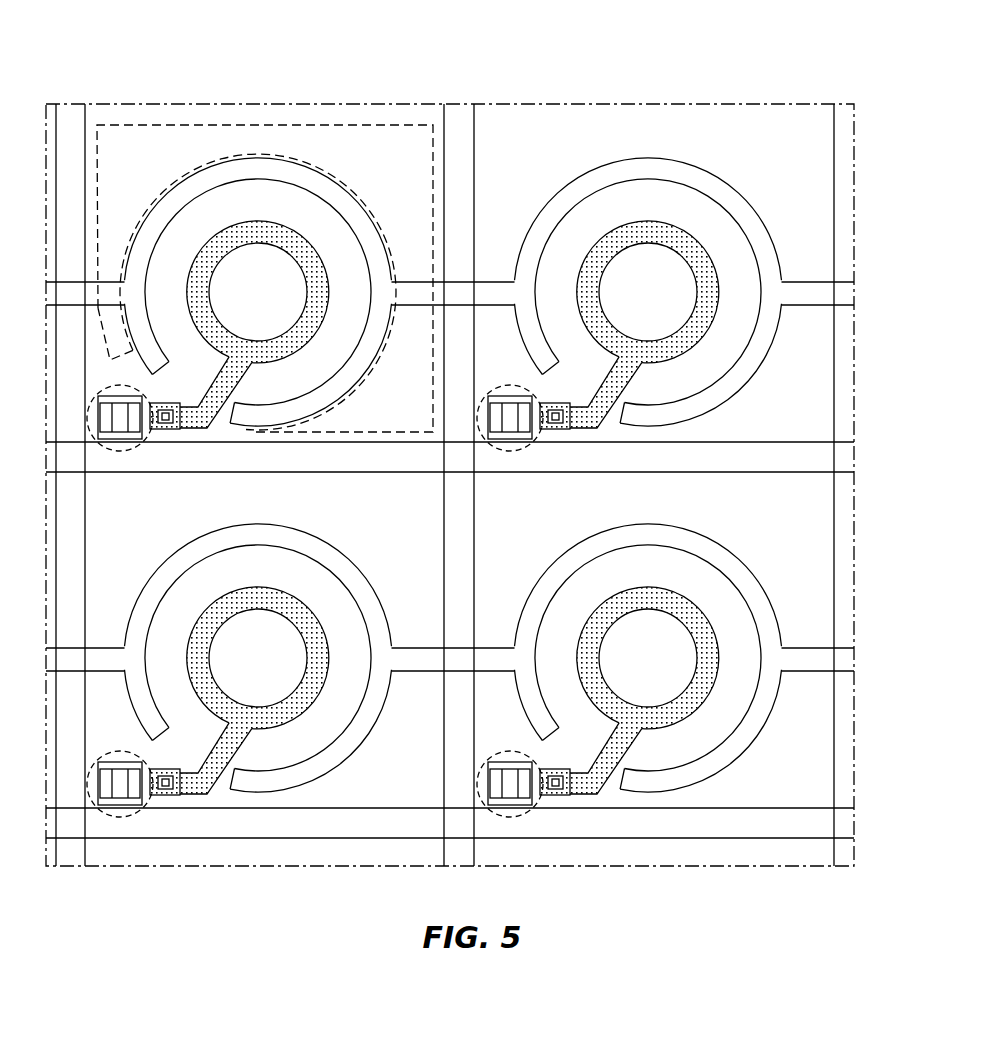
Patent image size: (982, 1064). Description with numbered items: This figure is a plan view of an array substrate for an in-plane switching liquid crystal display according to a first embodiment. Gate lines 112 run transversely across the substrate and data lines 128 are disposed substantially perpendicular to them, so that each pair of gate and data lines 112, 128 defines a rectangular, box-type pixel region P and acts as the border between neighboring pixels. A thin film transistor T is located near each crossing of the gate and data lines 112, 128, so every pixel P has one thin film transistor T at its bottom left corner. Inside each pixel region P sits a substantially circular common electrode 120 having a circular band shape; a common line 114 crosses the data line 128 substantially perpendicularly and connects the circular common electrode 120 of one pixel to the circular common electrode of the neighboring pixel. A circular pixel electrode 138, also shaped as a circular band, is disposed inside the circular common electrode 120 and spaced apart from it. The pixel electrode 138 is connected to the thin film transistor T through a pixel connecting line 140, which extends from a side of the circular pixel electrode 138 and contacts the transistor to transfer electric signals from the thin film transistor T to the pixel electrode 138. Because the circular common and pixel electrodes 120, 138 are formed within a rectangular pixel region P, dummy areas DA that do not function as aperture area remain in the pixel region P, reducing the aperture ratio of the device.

The gate line 112 is at (855, 442).
The common line 114 is at (855, 282).
The circular common electrode 120 is at (221, 178).
The data line 128 is at (85, 868).
The circular pixel electrode 138 is at (287, 237).
The pixel connecting line 140 is at (243, 375).
The thin film transistor T is at (110, 386).
The dummy area DA is at (338, 123).
The pixel region P is at (405, 112).